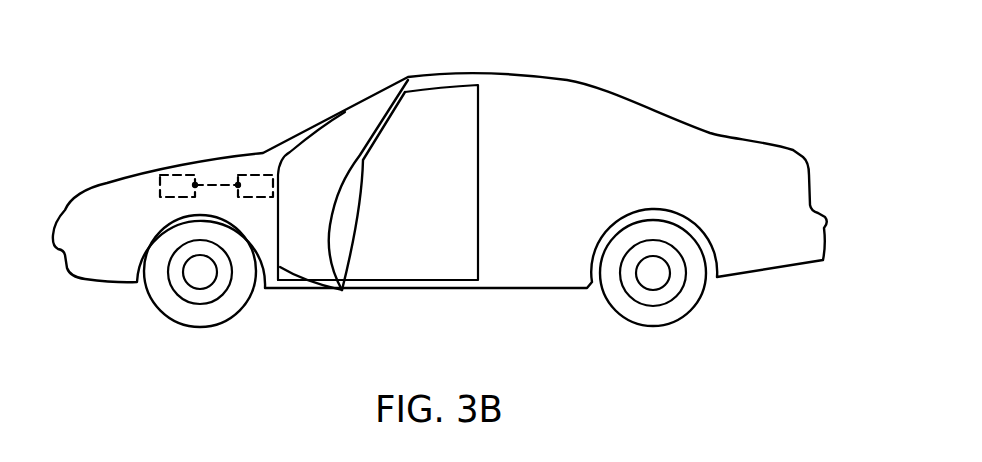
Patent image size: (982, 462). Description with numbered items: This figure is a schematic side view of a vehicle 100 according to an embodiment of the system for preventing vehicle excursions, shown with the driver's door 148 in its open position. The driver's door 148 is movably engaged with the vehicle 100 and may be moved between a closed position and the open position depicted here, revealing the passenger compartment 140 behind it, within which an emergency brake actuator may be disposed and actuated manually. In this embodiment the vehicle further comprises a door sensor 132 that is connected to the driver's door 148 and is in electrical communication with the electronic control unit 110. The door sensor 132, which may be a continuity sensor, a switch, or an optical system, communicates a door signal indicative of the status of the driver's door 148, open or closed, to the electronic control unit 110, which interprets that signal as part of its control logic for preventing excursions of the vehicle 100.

The vehicle 100 is at (652, 87).
The electronic control unit 110 is at (177, 175).
The door sensor 132 is at (255, 175).
The passenger compartment 140 is at (437, 157).
The driver's door 148 is at (357, 223).